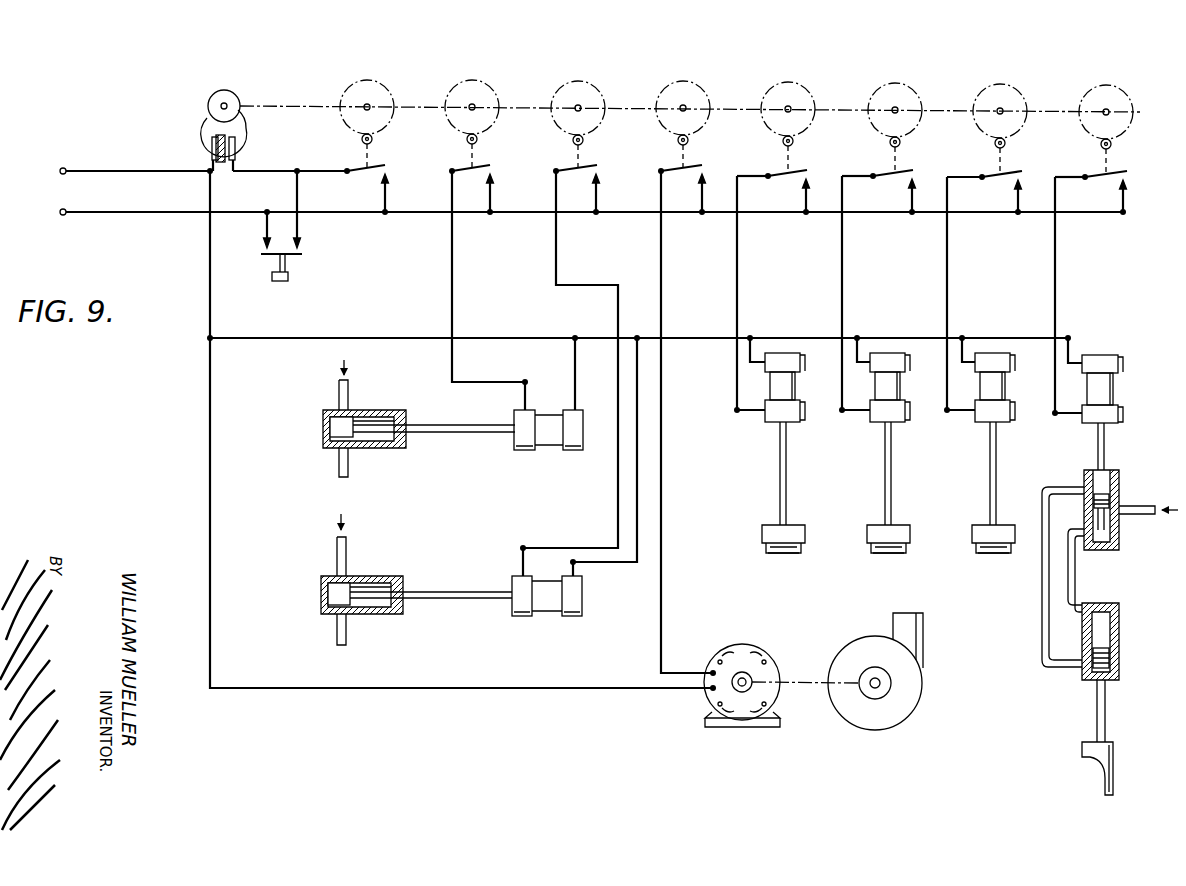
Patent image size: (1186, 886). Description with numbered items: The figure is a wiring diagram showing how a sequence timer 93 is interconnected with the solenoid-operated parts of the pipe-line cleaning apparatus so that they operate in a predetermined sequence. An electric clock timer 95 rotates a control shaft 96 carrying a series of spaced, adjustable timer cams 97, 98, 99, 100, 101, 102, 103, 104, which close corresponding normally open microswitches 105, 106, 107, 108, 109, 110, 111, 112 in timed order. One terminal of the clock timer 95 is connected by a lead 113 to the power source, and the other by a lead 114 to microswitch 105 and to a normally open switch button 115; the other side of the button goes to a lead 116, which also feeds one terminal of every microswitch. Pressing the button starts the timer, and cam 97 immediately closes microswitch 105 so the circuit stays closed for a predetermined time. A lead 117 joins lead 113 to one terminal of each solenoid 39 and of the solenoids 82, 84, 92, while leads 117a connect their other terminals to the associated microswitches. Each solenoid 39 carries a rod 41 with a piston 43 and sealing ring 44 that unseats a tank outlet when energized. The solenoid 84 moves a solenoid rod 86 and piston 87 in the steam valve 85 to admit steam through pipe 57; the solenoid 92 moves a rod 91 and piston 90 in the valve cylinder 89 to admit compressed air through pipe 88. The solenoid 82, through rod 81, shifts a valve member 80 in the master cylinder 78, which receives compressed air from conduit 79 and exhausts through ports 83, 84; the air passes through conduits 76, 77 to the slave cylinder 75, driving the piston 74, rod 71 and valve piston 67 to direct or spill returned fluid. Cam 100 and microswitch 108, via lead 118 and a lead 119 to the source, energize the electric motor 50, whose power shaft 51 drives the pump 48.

The solenoid 39 is at (775, 418).
The rod 41 is at (780, 492).
The piston 43 is at (795, 530).
The sealing ring 44 is at (786, 553).
The pump 48 is at (884, 718).
The electric motor 50 is at (747, 706).
The power shaft 51 is at (745, 671).
The steam pipe 57 is at (337, 392).
The piston 67 is at (1082, 745).
The rod 71 is at (1098, 714).
The piston 74 is at (1112, 658).
The slave cylinder 75 is at (1119, 629).
The conduit 76 is at (1076, 578).
The conduit 77 is at (1040, 661).
The master cylinder 78 is at (1110, 494).
The conduit 79 is at (1143, 516).
The valve member 80 is at (1110, 510).
The rod 81 is at (1100, 446).
The solenoid 82 is at (1107, 384).
The port 83 is at (1119, 480).
The solenoid 84 is at (551, 446).
The valve 85 is at (381, 410).
The solenoid rod 86 is at (449, 424).
The piston 87 is at (328, 425).
The air pipe 88 is at (335, 560).
The valve cylinder 89 is at (378, 576).
The piston 90 is at (326, 594).
The rod 91 is at (449, 591).
The solenoid 92 is at (551, 612).
The sequence timer 93 is at (279, 87).
The electric clock timer 95 is at (203, 125).
The control shaft 96 is at (303, 104).
The timer cam 97 is at (370, 80).
The timer cam 98 is at (474, 80).
The timer cam 99 is at (578, 81).
The timer cam 100 is at (685, 81).
The timer cam 101 is at (798, 70).
The timer cam 102 is at (897, 83).
The timer cam 103 is at (1004, 84).
The timer cam 104 is at (1110, 85).
The microswitch 105 is at (388, 165).
The microswitch 106 is at (493, 165).
The microswitch 107 is at (597, 165).
The microswitch 108 is at (703, 165).
The microswitch 109 is at (808, 170).
The microswitch 110 is at (913, 170).
The microswitch 111 is at (1021, 171).
The microswitch 112 is at (1126, 171).
The lead 113 is at (120, 171).
The lead 114 is at (323, 171).
The switch button 115 is at (280, 281).
The lead 116 is at (123, 212).
The lead 117 is at (362, 338).
The lead 117a is at (452, 279).
The lead 118 is at (661, 617).
The lead 119 is at (500, 688).